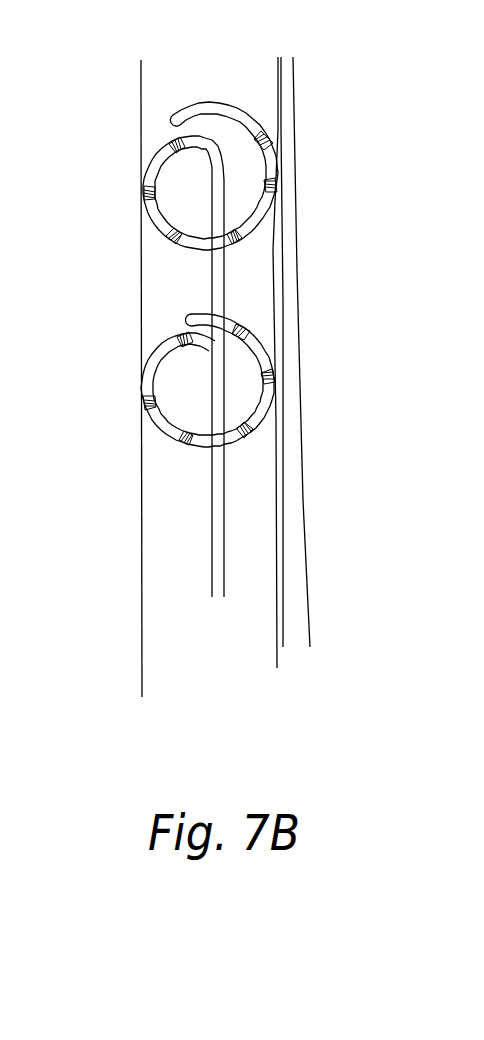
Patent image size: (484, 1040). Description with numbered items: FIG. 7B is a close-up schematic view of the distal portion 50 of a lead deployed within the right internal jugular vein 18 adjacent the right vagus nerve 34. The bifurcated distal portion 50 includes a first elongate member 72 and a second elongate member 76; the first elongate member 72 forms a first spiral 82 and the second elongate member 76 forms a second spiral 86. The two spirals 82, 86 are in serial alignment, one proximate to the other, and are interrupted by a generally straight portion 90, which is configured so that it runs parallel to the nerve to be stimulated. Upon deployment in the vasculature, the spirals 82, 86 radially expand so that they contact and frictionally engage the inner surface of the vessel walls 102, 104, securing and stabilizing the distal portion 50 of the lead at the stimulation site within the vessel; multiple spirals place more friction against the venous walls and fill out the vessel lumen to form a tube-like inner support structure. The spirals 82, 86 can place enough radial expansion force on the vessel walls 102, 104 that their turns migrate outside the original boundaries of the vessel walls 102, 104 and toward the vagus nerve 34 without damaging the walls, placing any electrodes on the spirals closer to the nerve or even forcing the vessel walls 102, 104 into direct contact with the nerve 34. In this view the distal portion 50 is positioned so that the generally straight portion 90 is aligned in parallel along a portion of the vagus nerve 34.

The right internal jugular vein 18 is at (157, 528).
The right vagus nerve 34 is at (289, 111).
The distal portion 50 is at (213, 582).
The first elongate member 72 is at (163, 433).
The second elongate member 76 is at (147, 230).
The first spiral 82 is at (267, 415).
The second spiral 86 is at (259, 232).
The generally straight portion 90 is at (210, 277).
The vessel wall 102 is at (143, 97).
The vessel wall 104 is at (278, 94).